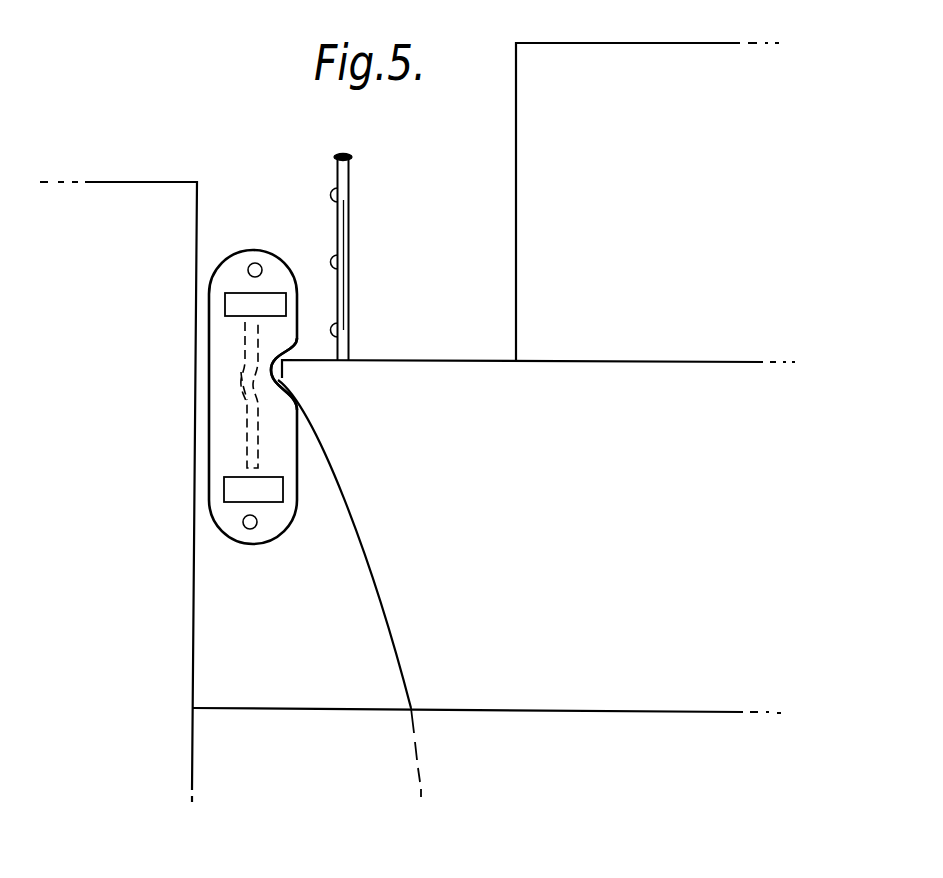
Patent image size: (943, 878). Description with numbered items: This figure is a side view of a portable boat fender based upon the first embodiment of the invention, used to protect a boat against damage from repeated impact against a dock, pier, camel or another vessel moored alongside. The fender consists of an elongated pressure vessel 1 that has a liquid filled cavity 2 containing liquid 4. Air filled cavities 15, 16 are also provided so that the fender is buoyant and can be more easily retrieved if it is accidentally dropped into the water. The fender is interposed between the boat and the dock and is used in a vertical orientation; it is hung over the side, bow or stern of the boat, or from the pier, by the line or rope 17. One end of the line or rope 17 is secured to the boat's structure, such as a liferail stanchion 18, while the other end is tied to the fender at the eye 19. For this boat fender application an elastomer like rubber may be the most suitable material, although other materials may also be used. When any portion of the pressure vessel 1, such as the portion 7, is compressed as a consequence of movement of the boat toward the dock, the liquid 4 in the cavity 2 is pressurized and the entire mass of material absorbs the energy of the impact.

The elongated pressure vessel 1 is at (297, 493).
The liquid filled cavity 2 is at (242, 388).
The liquid 4 is at (250, 428).
The portion of the pressure vessel 7 is at (286, 380).
The air filled cavity 15 is at (242, 300).
The air filled cavity 16 is at (237, 487).
The line or rope 17 is at (255, 267).
The liferail stanchion 18 is at (349, 247).
The eye 19 is at (255, 263).